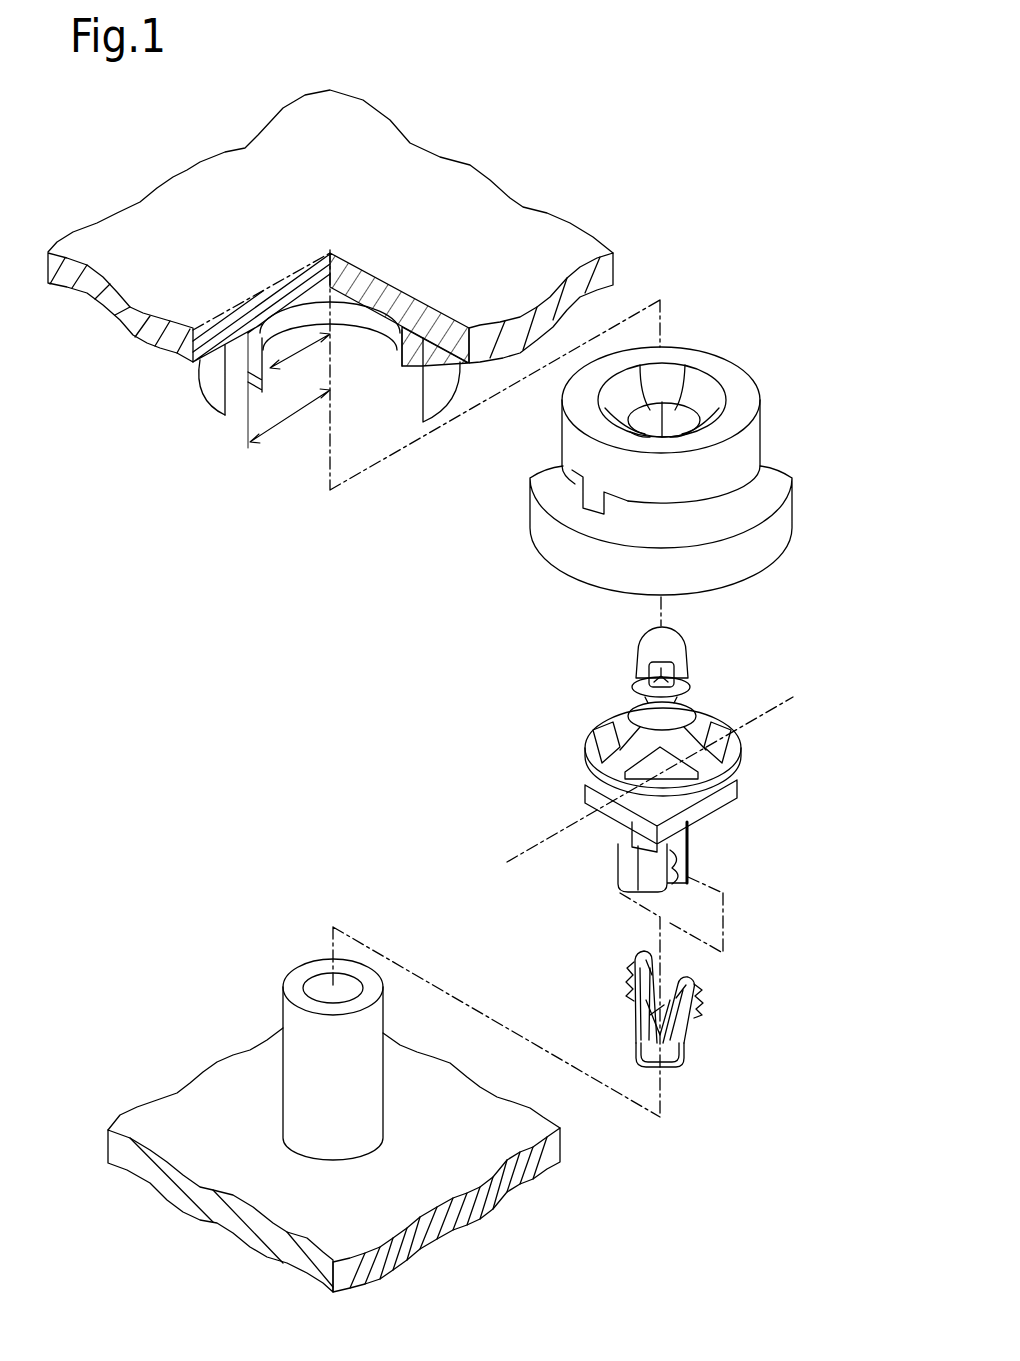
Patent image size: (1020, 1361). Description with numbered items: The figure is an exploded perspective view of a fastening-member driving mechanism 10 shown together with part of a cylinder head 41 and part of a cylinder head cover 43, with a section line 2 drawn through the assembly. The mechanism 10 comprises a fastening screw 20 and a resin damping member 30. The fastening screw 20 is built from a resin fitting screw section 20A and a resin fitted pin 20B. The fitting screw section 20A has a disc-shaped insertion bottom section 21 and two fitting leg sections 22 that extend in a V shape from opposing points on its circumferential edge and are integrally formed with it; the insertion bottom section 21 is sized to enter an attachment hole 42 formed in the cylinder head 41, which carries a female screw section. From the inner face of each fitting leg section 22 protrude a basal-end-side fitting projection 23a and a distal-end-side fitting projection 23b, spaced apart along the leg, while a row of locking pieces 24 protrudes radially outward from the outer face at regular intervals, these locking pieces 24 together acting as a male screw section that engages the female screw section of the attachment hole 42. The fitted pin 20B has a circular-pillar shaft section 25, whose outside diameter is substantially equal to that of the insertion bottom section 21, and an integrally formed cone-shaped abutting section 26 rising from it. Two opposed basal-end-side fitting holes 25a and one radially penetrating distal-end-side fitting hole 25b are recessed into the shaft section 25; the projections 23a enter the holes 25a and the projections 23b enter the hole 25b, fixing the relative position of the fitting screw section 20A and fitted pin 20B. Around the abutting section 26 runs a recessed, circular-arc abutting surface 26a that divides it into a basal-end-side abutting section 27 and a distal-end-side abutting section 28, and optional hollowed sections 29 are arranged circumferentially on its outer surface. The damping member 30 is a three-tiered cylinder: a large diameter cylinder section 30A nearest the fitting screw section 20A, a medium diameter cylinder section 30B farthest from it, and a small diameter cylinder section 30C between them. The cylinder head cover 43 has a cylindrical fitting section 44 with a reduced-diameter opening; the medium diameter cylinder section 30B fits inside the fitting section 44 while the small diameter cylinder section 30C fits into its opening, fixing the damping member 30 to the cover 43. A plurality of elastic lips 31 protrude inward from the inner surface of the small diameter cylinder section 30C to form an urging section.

The section line II-II 2 is at (793, 697).
The fastening-member driving mechanism 10 is at (405, 568).
The fastening screw 20 is at (482, 667).
The fitting screw section 20A is at (764, 962).
The fitted pin 20B is at (797, 628).
The insertion bottom section 21 is at (674, 1067).
The fitting leg sections 22 is at (636, 1010).
The basal-end-side fitting projection 23a is at (651, 1033).
The distal-end-side fitting projection 23b is at (646, 953).
The locking pieces 24 is at (630, 984).
The shaft section 25 is at (620, 887).
The basal-end-side fitting holes 25a is at (683, 868).
The distal-end-side fitting hole 25b is at (681, 834).
The abutting section 26 is at (588, 744).
The abutting surface 26a is at (636, 704).
The basal-end-side abutting section 27 is at (740, 744).
The distal-end-side abutting section 28 is at (680, 636).
The hollowed sections 29 is at (640, 668).
The damping member 30 is at (473, 561).
The large diameter cylinder section 30A is at (760, 557).
The medium diameter cylinder section 30B is at (762, 423).
The small diameter cylinder section 30C is at (677, 506).
The elastic lips 31 is at (677, 407).
The cylinder head 41 is at (334, 1108).
The attachment hole 42 is at (318, 986).
The cylinder head cover 43 is at (330, 269).
The fitting section 44 is at (206, 395).